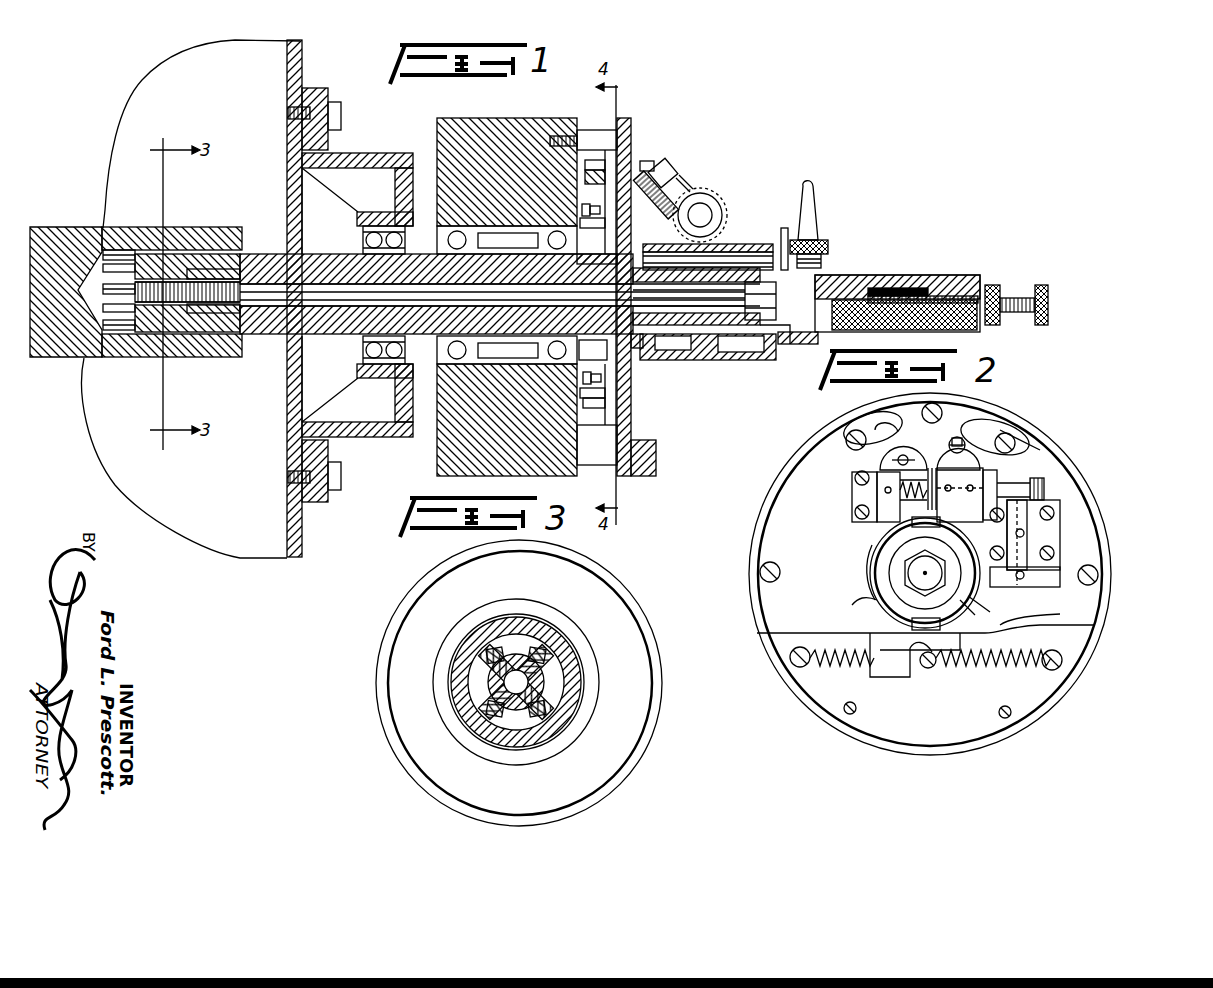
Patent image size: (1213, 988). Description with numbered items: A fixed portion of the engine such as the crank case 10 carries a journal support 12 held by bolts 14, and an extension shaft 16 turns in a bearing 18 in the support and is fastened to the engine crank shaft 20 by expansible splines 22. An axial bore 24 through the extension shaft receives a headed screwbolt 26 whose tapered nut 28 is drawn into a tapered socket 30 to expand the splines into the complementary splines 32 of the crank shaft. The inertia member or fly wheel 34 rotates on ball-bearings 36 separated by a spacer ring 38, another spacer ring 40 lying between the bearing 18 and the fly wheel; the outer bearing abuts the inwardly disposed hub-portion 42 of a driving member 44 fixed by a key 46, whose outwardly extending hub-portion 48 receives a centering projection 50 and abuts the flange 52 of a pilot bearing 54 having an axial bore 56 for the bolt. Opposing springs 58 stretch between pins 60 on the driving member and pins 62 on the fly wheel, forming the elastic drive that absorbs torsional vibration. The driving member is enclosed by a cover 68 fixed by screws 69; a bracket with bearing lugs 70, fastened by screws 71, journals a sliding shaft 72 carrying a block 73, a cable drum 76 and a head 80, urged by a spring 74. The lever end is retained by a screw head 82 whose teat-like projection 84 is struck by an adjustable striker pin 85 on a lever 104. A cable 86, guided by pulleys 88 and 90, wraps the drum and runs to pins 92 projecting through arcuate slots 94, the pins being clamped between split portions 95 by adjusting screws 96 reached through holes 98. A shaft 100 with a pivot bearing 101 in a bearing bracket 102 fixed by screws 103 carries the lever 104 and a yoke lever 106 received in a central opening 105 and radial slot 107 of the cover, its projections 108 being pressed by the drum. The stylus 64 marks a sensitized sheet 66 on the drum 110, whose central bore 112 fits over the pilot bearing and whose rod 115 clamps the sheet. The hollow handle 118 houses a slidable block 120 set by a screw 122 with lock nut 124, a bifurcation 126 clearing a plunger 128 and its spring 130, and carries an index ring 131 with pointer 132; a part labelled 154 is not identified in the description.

In FIG. 1, the fixed portion of engine 10 is at (292, 93).
In FIG. 1, the journal support 12 is at (356, 165).
In FIG. 3, the journal support 12 is at (580, 570).
In FIG. 1, the bolts 14 is at (336, 118).
In FIG. 1, the extension shaft 16 is at (272, 335).
In FIG. 3, the extension shaft 16 is at (470, 640).
In FIG. 1, the bearing 18 is at (370, 240).
In FIG. 1, the engine crank shaft 20 is at (182, 228).
In FIG. 3, the engine crank shaft 20 is at (448, 668).
In FIG. 1, the expansible splines 22 is at (152, 358).
In FIG. 3, the expansible splines 22 is at (500, 722).
In FIG. 1, the axial bore 24 is at (318, 334).
In FIG. 1, the headed screwbolt 26 is at (272, 278).
In FIG. 3, the headed screwbolt 26 is at (526, 680).
In FIG. 1, the tapered nut 28 is at (120, 360).
In FIG. 3, the tapered nut 28 is at (535, 658).
In FIG. 1, the tapered socket 30 is at (217, 340).
In FIG. 1, the complementary splines 32 is at (96, 356).
In FIG. 3, the complementary splines 32 is at (492, 710).
In FIG. 1, the inertia member 34 is at (520, 118).
In FIG. 2, the inertia member 34 is at (890, 724).
In FIG. 1, the annular ball-bearings 36 is at (452, 232).
In FIG. 1, the spacer ring 38 is at (507, 350).
In FIG. 1, the spacer ring 40 is at (396, 350).
In FIG. 1, the inwardly disposed hub-portion 42 is at (593, 350).
In FIG. 1, the driving member 44 is at (631, 400).
In FIG. 2, the driving member 44 is at (885, 680).
In FIG. 1, the key 46 is at (597, 250).
In FIG. 1, the outwardly extending hub-portion 48 is at (633, 362).
In FIG. 1, the centering projection 50 is at (668, 350).
In FIG. 1, the flange 52 is at (637, 350).
In FIG. 2, the flange 52 is at (985, 636).
In FIG. 1, the pilot bearing 54 is at (702, 350).
In FIG. 2, the pilot bearing 54 is at (925, 573).
In FIG. 1, the axial bore 56 is at (725, 350).
In FIG. 1, the springs 58 is at (580, 220).
In FIG. 2, the springs 58 is at (838, 675).
In FIG. 1, the pins 60 is at (621, 307).
In FIG. 2, the pins 60 is at (934, 670).
In FIG. 1, the pins 62 is at (582, 205).
In FIG. 2, the pins 62 is at (794, 666).
In FIG. 2, the stylus 64 is at (985, 598).
In FIG. 1, the sensitized sheet 66 is at (708, 238).
In FIG. 1, the cover 68 is at (612, 135).
In FIG. 1, the screws 69 is at (600, 130).
In FIG. 2, the screws 69 is at (760, 572).
In FIG. 1, the bearing lugs 70 is at (712, 203).
In FIG. 2, the bearing lugs 70 is at (872, 530).
In FIG. 2, the screws 71 is at (820, 528).
In FIG. 1, the shaft 72 is at (708, 215).
In FIG. 2, the shaft 72 is at (852, 490).
In FIG. 2, the block 73 is at (966, 433).
In FIG. 2, the spring 74 is at (880, 506).
In FIG. 1, the cable drum 76 is at (724, 226).
In FIG. 2, the cable drum 76 is at (946, 468).
In FIG. 2, the head 80 is at (1012, 482).
In FIG. 2, the screw head 82 is at (960, 495).
In FIG. 2, the teat-like projection 84 is at (1032, 488).
In FIG. 2, the adjustable striker pin 85 is at (1053, 489).
In FIG. 1, the cable 86 is at (704, 193).
In FIG. 2, the cable 86 is at (940, 408).
In FIG. 1, the guide pulley 88 is at (684, 172).
In FIG. 2, the guide pulley 88 is at (972, 452).
In FIG. 1, the guide pulley 90 is at (664, 170).
In FIG. 2, the guide pulley 90 is at (903, 455).
In FIG. 1, the pins 92 is at (655, 165).
In FIG. 2, the pins 92 is at (856, 430).
In FIG. 2, the arcuate slots 94 is at (830, 460).
In FIG. 1, the split portions 95 is at (585, 175).
In FIG. 2, the split portions 95 is at (880, 430).
In FIG. 1, the adjusting screws 96 is at (585, 163).
In FIG. 2, the adjusting screws 96 is at (1005, 430).
In FIG. 2, the holes 98 is at (1030, 536).
In FIG. 2, the shaft 100 is at (1060, 545).
In FIG. 2, the pivot bearing 101 is at (1060, 587).
In FIG. 2, the bearing bracket 102 is at (1060, 546).
In FIG. 2, the screws 103 is at (1054, 518).
In FIG. 2, the lever 104 is at (1060, 497).
In FIG. 2, the central opening 105 is at (868, 578).
In FIG. 2, the yoke lever 106 is at (1020, 616).
In FIG. 2, the radial slot 107 is at (1095, 607).
In FIG. 1, the projections 108 is at (624, 322).
In FIG. 2, the projections 108 is at (866, 600).
In FIG. 1, the drum 110 is at (741, 344).
In FIG. 1, the central bore 112 is at (678, 380).
In FIG. 1, the cylindrical rod 115 is at (785, 228).
In FIG. 1, the hollow handle 118 is at (880, 275).
In FIG. 1, the slidable block 120 is at (832, 290).
In FIG. 1, the screw 122 is at (1047, 294).
In FIG. 1, the lock nut 124 is at (996, 288).
In FIG. 1, the bifurcation 126 is at (820, 258).
In FIG. 1, the plunger 128 is at (816, 240).
In FIG. 1, the spring 130 is at (818, 340).
In FIG. 1, the ring 131 is at (783, 347).
In FIG. 1, the pointer 132 is at (808, 192).
In FIG. 1, the bracket 154 is at (656, 455).